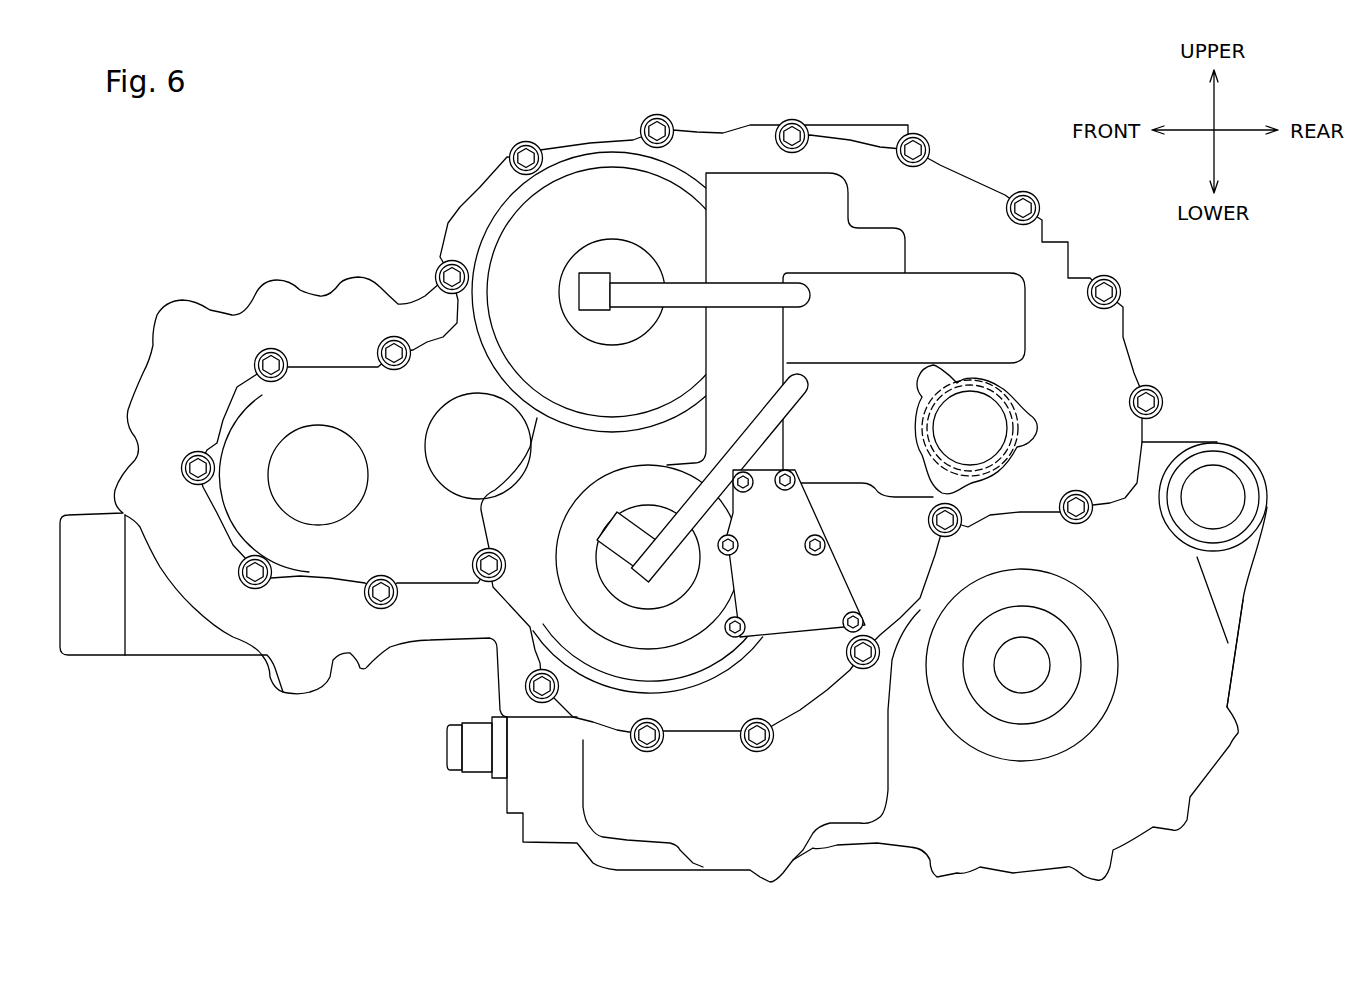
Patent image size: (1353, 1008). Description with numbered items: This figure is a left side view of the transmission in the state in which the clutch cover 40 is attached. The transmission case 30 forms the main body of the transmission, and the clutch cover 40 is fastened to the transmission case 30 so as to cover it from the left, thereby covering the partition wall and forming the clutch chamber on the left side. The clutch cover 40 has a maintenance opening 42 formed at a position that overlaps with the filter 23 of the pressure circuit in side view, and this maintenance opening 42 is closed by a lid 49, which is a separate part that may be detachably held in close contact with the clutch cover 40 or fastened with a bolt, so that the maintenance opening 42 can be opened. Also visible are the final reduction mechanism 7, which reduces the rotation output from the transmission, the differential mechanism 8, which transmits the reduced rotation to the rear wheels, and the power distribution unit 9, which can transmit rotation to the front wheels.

The final reduction mechanism 7 is at (1192, 757).
The differential mechanism 8 is at (1192, 757).
The power distribution unit 9 is at (421, 774).
The filter 23 is at (1013, 403).
The transmission case 30 is at (282, 297).
The clutch cover 40 is at (955, 185).
The maintenance opening 42 is at (1023, 443).
The lid 49 is at (1003, 385).